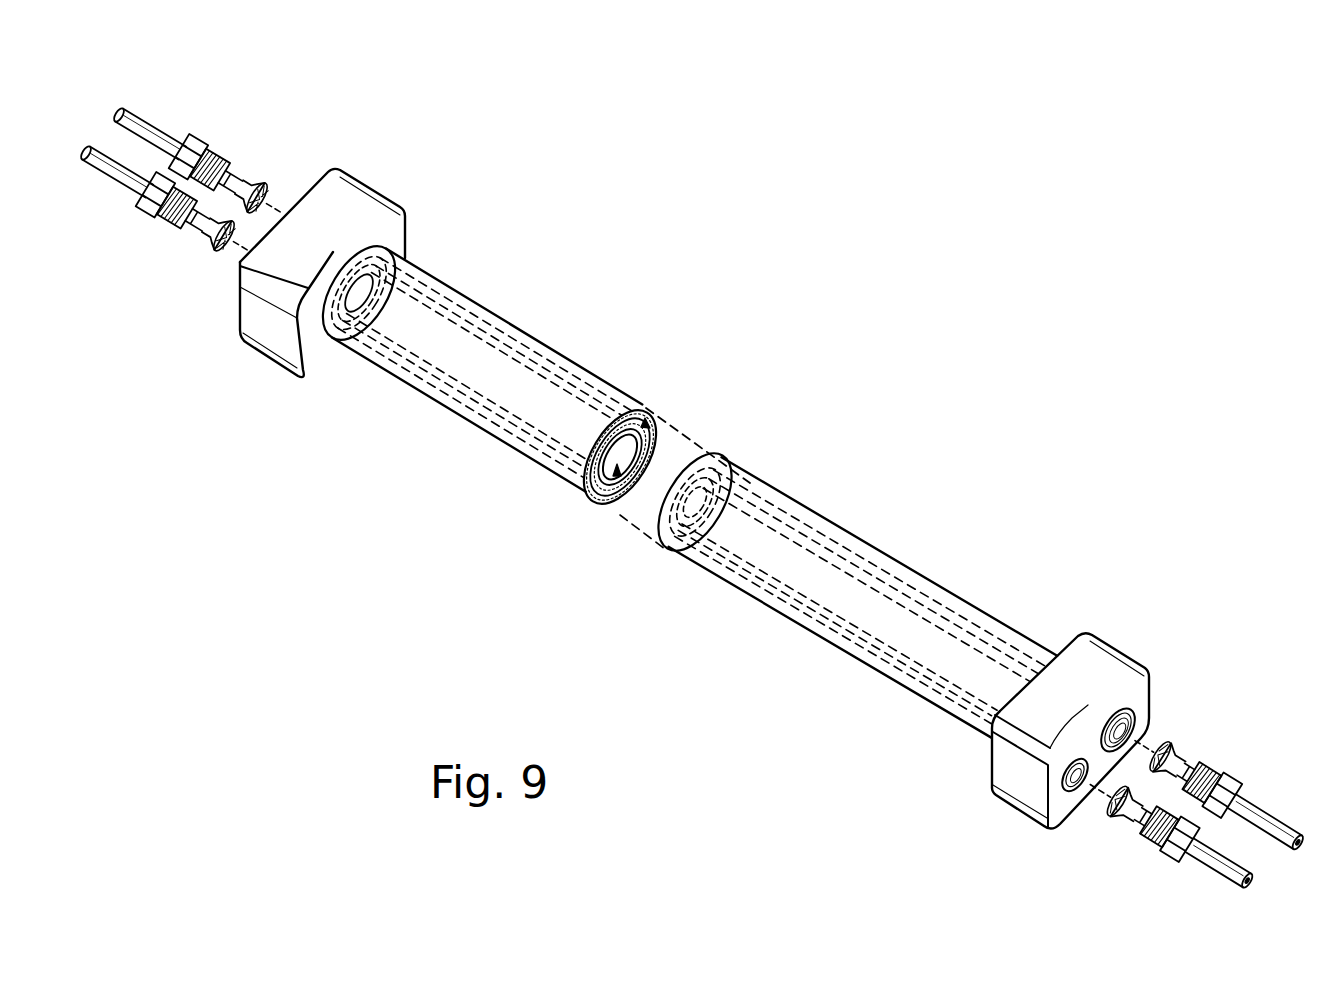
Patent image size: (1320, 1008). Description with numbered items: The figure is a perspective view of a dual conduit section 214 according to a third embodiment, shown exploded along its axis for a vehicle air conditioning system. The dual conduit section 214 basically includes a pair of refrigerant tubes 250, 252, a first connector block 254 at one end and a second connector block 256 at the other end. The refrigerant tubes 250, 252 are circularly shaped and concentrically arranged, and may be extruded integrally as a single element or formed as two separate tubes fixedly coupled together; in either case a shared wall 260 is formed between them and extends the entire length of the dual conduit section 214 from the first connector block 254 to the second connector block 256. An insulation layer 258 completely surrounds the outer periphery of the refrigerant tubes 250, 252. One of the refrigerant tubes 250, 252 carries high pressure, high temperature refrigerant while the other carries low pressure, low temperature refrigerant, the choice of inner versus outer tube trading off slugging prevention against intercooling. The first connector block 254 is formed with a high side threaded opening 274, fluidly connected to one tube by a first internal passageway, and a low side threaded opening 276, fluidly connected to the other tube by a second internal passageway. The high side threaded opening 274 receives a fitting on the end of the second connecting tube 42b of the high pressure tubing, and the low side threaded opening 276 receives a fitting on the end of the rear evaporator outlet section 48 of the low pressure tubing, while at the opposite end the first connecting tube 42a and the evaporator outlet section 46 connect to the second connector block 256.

The dual conduit section 214 is at (639, 347).
The refrigerant tube 250 is at (618, 476).
The refrigerant tube 252 is at (658, 414).
The first connector block 254 is at (1097, 658).
The second connector block 256 is at (347, 200).
The insulation layer 258 is at (717, 576).
The shared wall 260 is at (653, 445).
The high side threaded opening 274 is at (1062, 776).
The low side threaded opening 276 is at (1133, 733).
The evaporator outlet section 46 is at (144, 121).
The rear evaporator outlet section 48 is at (1275, 815).
The first connecting tube 42a is at (113, 173).
The second connecting tube 42b is at (1223, 862).